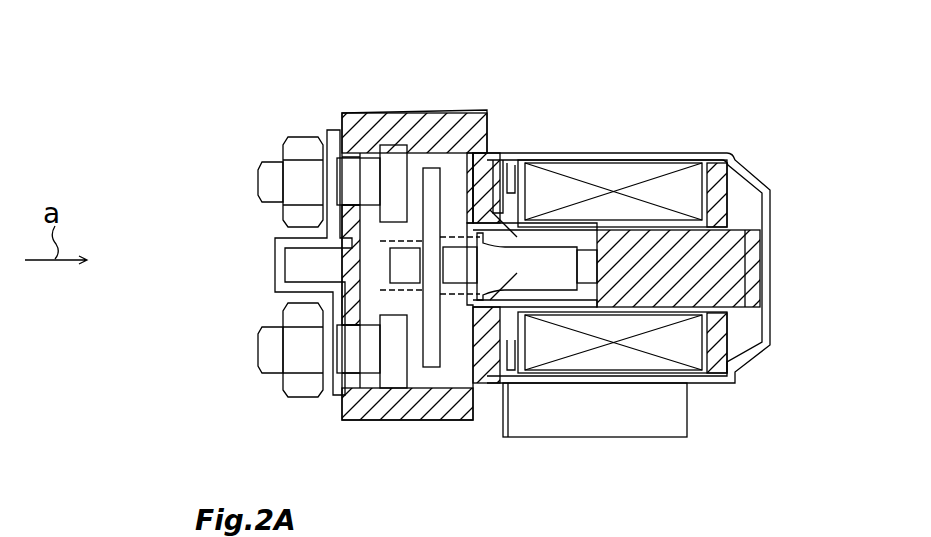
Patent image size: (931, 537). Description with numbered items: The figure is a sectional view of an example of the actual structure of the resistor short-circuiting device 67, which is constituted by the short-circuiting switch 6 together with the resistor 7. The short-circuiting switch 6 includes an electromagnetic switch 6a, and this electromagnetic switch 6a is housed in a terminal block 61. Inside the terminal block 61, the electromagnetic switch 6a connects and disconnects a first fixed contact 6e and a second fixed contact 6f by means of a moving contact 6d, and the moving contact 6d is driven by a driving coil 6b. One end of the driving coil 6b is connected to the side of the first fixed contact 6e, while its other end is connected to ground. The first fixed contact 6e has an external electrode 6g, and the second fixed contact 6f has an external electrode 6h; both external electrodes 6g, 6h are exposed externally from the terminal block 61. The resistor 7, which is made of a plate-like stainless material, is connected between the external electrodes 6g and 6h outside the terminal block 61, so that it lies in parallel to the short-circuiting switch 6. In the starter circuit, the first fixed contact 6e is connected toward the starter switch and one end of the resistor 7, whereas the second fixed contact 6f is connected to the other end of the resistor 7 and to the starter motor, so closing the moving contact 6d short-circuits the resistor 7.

The short-circuiting switch 6 is at (728, 154).
The electromagnetic switch 6a is at (459, 353).
The driving coil 6b is at (612, 158).
The moving contact 6d is at (432, 168).
The first fixed contact 6e is at (389, 368).
The second fixed contact 6f is at (388, 148).
The external electrode 6g is at (280, 375).
The external electrode 6h is at (268, 162).
The resistor 7 is at (276, 254).
The terminal block 61 is at (343, 114).
The resistor short-circuiting device 67 is at (808, 417).